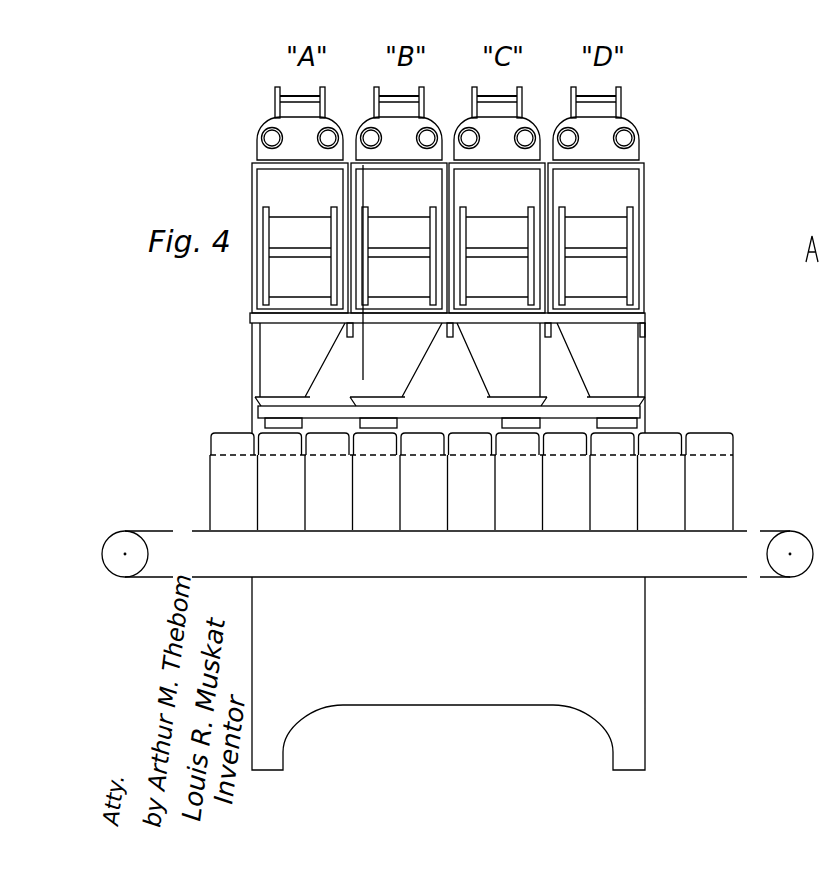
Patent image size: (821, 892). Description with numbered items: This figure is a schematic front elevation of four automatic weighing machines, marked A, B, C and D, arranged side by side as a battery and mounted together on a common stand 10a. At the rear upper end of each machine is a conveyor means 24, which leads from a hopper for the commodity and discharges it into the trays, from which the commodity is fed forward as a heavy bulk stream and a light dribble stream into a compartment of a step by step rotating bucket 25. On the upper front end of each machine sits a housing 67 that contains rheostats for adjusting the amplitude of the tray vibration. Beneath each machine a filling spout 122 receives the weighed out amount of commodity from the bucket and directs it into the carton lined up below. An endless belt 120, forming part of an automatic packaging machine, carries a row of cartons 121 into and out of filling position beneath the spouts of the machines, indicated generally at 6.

The filling unit 6 is at (353, 186).
The conveyor means 24 is at (378, 105).
The housing 67 is at (251, 153).
The step by step rotating bucket 25 is at (313, 211).
The filling spout 122 is at (352, 388).
The carton 121 is at (207, 466).
The endless belt 120 is at (732, 579).
The common stand 10a is at (655, 694).